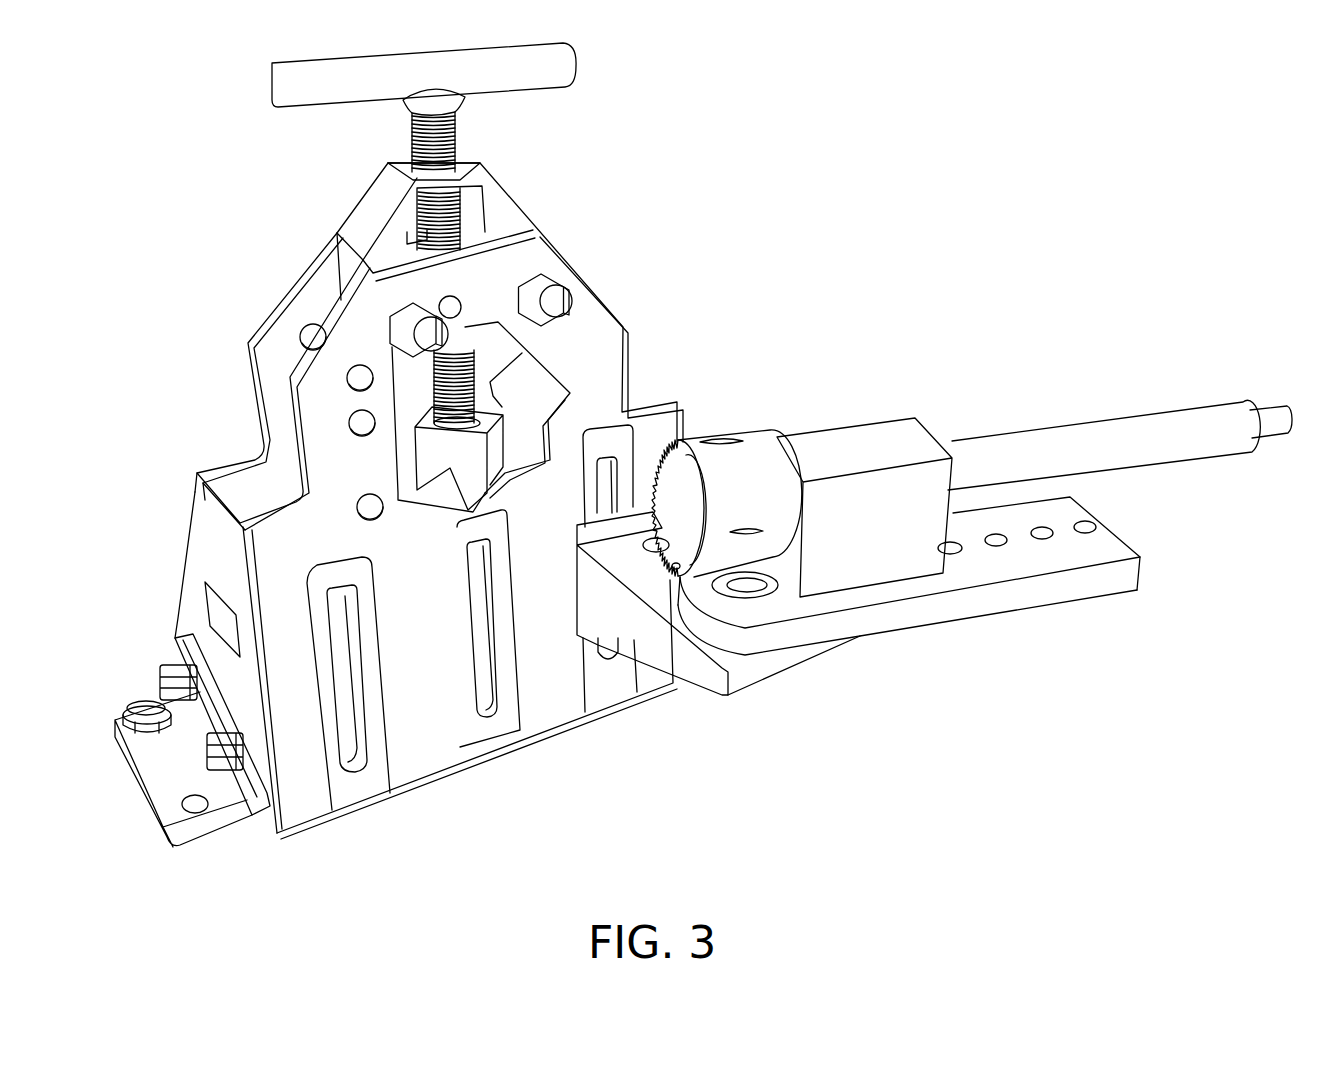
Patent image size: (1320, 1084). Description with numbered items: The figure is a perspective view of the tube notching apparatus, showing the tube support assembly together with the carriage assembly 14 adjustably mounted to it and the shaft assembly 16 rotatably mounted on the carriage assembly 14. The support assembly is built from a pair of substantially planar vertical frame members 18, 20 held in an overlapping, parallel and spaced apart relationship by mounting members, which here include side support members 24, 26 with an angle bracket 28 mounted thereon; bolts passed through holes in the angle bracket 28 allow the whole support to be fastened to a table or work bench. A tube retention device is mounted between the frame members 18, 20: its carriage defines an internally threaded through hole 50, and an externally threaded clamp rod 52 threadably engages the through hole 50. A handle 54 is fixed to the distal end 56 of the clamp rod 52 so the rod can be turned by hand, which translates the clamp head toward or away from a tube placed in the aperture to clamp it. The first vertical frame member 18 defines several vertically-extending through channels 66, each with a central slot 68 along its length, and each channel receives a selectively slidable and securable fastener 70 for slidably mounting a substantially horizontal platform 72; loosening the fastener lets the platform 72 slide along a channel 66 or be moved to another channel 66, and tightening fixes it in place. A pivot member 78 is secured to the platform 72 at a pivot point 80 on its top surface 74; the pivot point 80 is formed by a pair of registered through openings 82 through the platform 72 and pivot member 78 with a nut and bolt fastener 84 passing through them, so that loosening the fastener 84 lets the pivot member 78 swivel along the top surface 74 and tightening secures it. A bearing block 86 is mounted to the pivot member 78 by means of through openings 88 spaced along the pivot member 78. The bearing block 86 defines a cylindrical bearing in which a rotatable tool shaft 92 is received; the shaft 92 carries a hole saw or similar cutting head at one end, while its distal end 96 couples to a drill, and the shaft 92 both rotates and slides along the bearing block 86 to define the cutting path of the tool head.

The carriage assembly 14 is at (813, 678).
The shaft assembly 16 is at (898, 370).
The vertical frame member 18 is at (606, 296).
The vertical frame member 20 is at (291, 290).
The side support member 24 is at (185, 570).
The side support member 26 is at (646, 388).
The angle bracket 28 is at (178, 640).
The internally threaded through hole 50 is at (462, 168).
The clamp rod 52 is at (410, 131).
The handle 54 is at (579, 60).
The distal end 56 is at (463, 97).
The through channels 66 is at (347, 797).
The central slot 68 is at (363, 763).
The fastener 70 is at (643, 653).
The platform 72 is at (730, 697).
The top surface 74 is at (710, 663).
The pivot member 78 is at (1045, 598).
The pivot point 80 is at (767, 440).
The registered through openings 82 is at (747, 580).
The nut and bolt fastener 84 is at (727, 593).
The bearing block 86 is at (853, 423).
The through openings 88 is at (1085, 520).
The tool shaft 92 is at (1122, 410).
The distal end 96 is at (1267, 403).